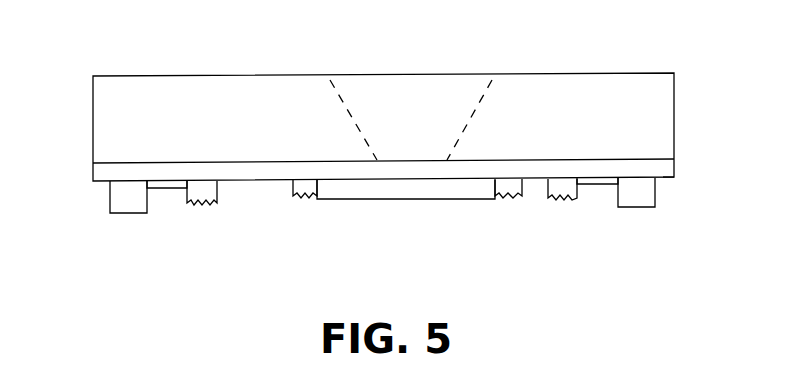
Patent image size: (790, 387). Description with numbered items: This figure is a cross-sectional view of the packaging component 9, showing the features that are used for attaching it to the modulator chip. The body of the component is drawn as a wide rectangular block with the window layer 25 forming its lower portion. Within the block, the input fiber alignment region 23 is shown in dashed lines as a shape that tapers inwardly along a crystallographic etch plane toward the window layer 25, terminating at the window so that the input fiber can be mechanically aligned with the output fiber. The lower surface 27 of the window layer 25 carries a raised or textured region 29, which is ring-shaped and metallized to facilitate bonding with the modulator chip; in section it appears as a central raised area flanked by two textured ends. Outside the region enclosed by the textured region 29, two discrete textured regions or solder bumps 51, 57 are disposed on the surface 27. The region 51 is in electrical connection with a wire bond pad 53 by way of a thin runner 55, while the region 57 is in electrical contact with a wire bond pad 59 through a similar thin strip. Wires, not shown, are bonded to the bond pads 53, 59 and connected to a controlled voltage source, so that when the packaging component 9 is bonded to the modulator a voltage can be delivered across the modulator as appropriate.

The packaging component 9 is at (694, 107).
The input fiber alignment region 23 is at (409, 88).
The window layer 25 is at (100, 173).
The surface of the window layer 27 is at (663, 178).
The textured region 29 is at (305, 198).
The discrete textured region or solder bump 51 is at (208, 192).
The wire bond pad 53 is at (123, 202).
The runner 55 is at (160, 187).
The discrete textured region or solder bump 57 is at (562, 192).
The wire bond pad 59 is at (638, 195).